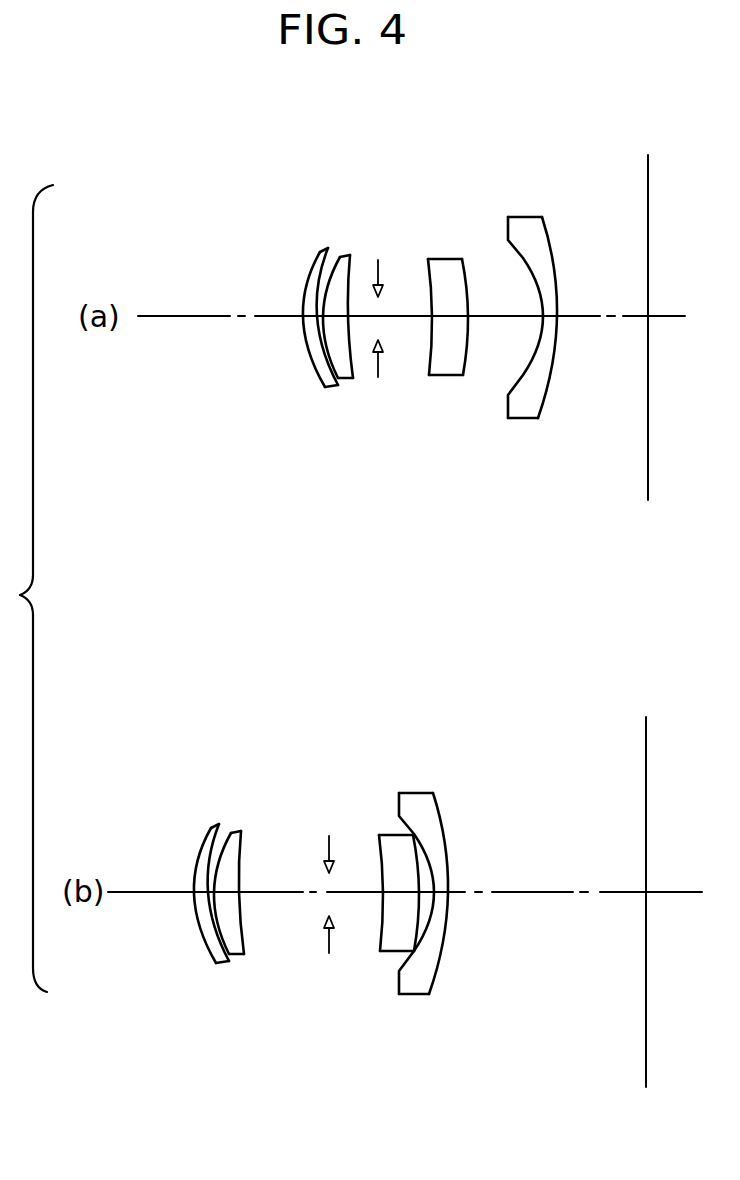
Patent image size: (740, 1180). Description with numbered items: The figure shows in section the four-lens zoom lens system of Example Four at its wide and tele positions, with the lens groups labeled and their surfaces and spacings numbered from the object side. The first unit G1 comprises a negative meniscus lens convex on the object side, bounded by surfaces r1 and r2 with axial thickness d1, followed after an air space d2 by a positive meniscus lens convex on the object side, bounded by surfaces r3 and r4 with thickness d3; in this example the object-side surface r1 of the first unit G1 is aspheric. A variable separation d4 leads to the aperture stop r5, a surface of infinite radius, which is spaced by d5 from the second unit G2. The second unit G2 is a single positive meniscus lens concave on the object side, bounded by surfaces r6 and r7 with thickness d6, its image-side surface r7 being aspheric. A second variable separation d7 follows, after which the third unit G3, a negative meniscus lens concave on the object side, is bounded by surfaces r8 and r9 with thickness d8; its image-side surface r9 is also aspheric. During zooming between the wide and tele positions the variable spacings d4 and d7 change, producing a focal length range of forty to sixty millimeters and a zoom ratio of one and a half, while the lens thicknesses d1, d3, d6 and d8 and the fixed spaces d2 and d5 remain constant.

The first unit G1 is at (362, 165).
The second unit G2 is at (470, 165).
The third unit G3 is at (570, 165).
The radius of curvature of the first lens surface r1 is at (305, 265).
The radius of curvature of the second lens surface r2 is at (318, 268).
The radius of curvature of the third lens surface r3 is at (337, 268).
The radius of curvature of the fourth lens surface r4 is at (357, 278).
The stop r5 is at (380, 306).
The radius of curvature of the sixth lens surface r6 is at (430, 282).
The radius of curvature of the seventh lens surface r7 is at (466, 270).
The radius of curvature of the eighth lens surface r8 is at (522, 258).
The radius of curvature of the ninth lens surface r9 is at (548, 247).
The separation between adjacent lens surfaces d1 is at (305, 322).
The separation between adjacent lens surfaces d2 is at (322, 332).
The separation between adjacent lens surfaces d3 is at (337, 335).
The separation between adjacent lens surfaces d4 is at (365, 335).
The separation between adjacent lens surfaces d5 is at (403, 335).
The separation between adjacent lens surfaces d6 is at (450, 335).
The separation between adjacent lens surfaces d7 is at (505, 335).
The separation between adjacent lens surfaces d8 is at (551, 322).